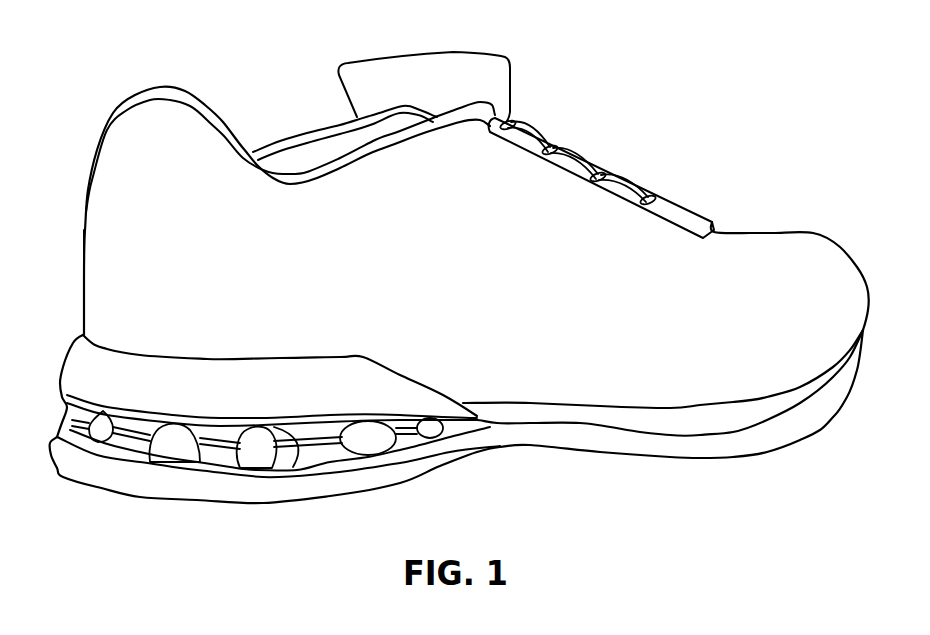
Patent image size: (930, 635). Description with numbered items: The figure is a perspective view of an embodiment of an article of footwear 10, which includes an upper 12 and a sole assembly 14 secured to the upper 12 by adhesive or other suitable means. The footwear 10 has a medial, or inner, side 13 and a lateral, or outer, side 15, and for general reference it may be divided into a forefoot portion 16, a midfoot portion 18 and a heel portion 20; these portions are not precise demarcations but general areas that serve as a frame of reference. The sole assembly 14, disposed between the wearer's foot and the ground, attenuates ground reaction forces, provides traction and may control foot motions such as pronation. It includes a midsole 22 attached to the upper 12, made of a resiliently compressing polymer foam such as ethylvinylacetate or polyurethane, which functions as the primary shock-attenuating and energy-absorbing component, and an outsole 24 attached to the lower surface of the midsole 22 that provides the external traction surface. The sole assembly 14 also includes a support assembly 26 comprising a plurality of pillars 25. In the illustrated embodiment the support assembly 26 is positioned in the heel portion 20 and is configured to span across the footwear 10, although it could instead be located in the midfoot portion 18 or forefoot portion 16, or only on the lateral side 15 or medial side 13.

The article of footwear 10 is at (672, 125).
The upper 12 is at (424, 195).
The medial side 13 is at (742, 229).
The sole assembly 14 is at (159, 496).
The lateral side 15 is at (558, 274).
The forefoot portion 16 is at (768, 319).
The midfoot portion 18 is at (419, 330).
The heel portion 20 is at (126, 314).
The midsole 22 is at (598, 418).
The outsole 24 is at (698, 446).
The pillars 25 is at (215, 433).
The support assembly 26 is at (49, 348).